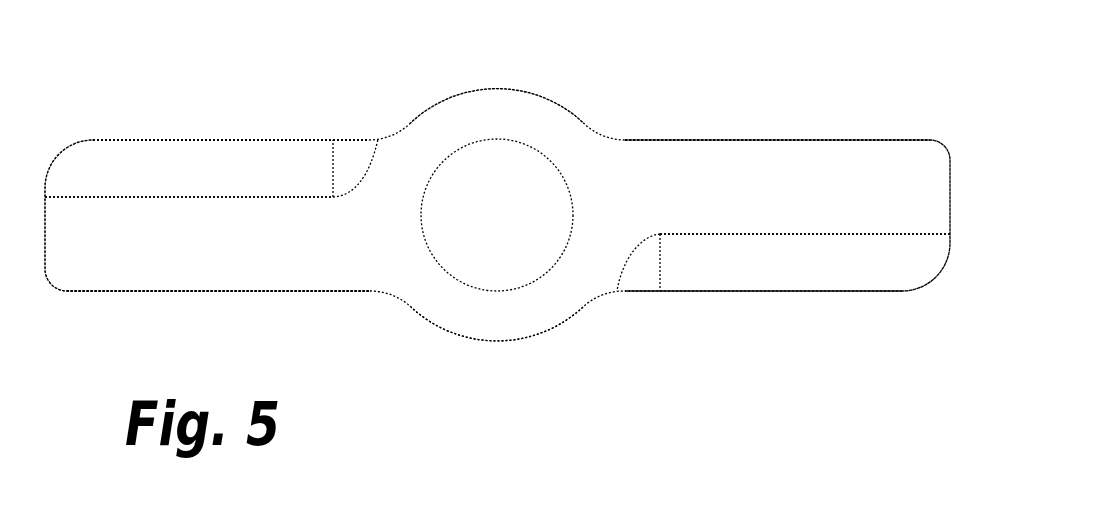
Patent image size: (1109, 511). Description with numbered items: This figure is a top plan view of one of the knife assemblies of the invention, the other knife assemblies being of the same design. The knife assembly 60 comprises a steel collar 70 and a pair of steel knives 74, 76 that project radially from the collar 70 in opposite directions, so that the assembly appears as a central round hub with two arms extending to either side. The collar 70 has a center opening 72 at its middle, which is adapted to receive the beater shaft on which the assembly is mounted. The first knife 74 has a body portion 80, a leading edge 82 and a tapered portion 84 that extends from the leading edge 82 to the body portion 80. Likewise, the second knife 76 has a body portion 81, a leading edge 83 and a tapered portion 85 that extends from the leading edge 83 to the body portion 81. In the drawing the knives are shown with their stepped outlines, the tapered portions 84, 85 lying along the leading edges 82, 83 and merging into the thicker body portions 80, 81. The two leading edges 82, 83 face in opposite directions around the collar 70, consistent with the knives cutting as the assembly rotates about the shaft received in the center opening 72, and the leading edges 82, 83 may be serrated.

The knife assembly 60 is at (581, 338).
The steel collar 70 is at (558, 140).
The center opening 72 is at (497, 215).
The knife 74 is at (253, 257).
The knife 76 is at (712, 192).
The body portion 80 is at (133, 243).
The body portion 81 is at (840, 183).
The leading edge 82 is at (133, 138).
The leading edge 83 is at (806, 291).
The tapered portion 84 is at (217, 162).
The tapered portion 85 is at (856, 260).